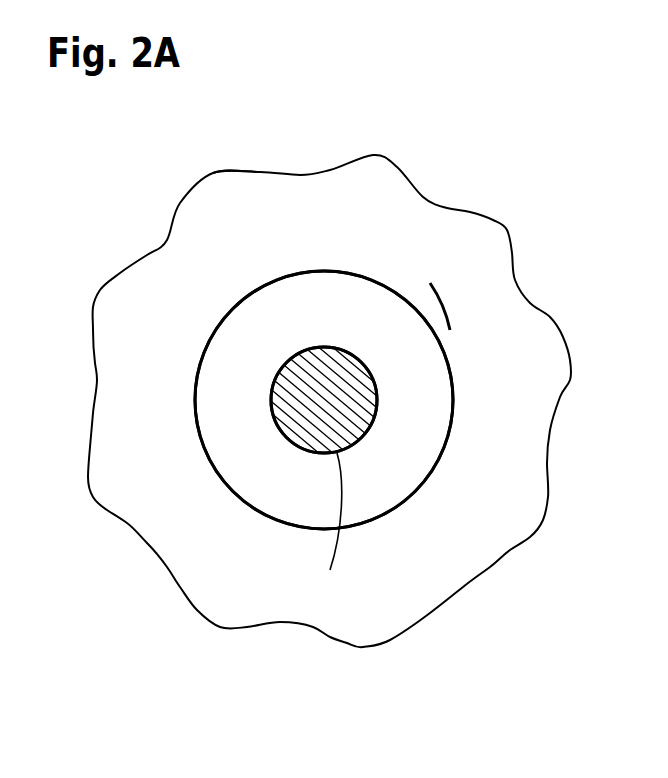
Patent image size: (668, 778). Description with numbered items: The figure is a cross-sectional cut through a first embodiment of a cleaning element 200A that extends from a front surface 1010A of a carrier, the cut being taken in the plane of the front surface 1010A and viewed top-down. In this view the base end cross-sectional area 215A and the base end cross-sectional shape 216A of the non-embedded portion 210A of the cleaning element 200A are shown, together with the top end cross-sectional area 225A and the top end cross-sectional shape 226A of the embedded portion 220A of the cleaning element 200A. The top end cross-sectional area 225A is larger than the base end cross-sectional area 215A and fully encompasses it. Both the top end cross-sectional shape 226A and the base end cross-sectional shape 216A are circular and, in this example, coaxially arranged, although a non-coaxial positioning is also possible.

The front surface 1010A is at (465, 518).
The cleaning element 200A is at (378, 526).
The top end cross-sectional area 225A is at (427, 423).
The top end cross-sectional shape 226A is at (457, 358).
The base end cross-sectional area 215A is at (322, 390).
The base end cross-sectional shape 216A is at (359, 346).
The non-embedded portion 210A is at (337, 455).
The embedded portion 220A is at (228, 490).